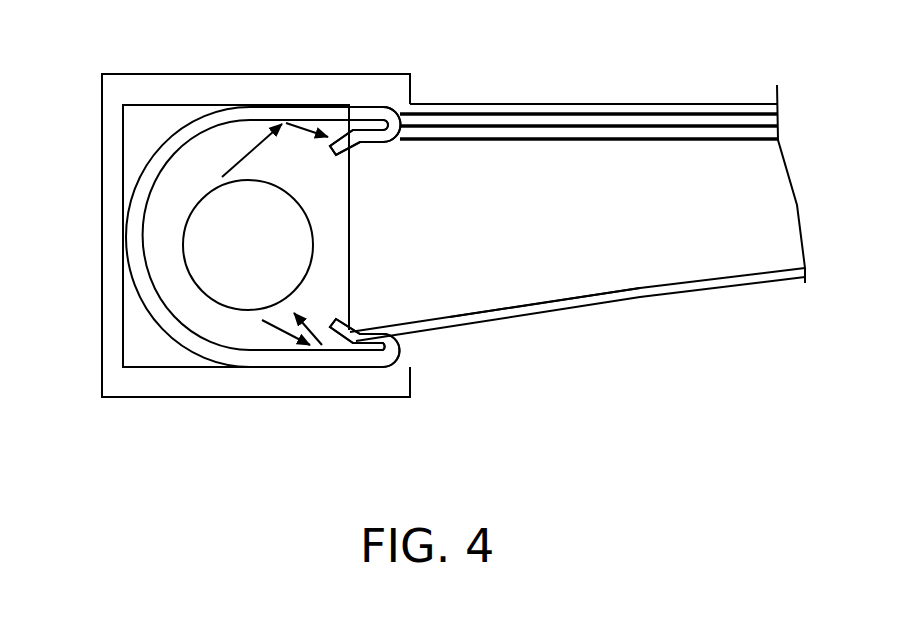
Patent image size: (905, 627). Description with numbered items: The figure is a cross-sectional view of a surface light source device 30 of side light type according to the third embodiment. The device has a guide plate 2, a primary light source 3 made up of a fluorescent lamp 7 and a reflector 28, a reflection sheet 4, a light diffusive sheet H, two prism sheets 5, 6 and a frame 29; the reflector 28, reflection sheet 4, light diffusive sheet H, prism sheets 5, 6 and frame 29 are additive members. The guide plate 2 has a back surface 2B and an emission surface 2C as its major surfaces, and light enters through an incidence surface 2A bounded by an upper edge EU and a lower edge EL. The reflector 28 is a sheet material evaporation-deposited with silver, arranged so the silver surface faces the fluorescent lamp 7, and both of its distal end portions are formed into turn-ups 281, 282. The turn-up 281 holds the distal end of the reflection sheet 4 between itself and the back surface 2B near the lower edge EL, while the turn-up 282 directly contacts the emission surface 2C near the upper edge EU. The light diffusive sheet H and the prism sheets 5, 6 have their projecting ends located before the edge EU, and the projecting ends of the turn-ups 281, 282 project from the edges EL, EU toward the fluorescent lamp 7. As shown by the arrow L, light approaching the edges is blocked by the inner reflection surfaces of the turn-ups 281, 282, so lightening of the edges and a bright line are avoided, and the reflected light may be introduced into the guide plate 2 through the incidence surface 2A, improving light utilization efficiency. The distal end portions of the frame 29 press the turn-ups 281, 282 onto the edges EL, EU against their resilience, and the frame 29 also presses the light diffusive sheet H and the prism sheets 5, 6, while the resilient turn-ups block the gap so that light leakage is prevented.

The guide plate 2 is at (653, 274).
The incidence surface 2A is at (350, 203).
The back surface 2B is at (743, 279).
The emission surface 2C is at (601, 142).
The primary light source 3 is at (147, 137).
The reflection sheet 4 is at (555, 300).
The prism sheet 5 is at (591, 140).
The prism sheet 6 is at (517, 103).
The fluorescent lamp 7 is at (233, 303).
The reflector 28 is at (170, 318).
The frame 29 is at (238, 88).
The surface light source device 30 is at (222, 455).
The turn-up 281 is at (365, 338).
The turn-up 282 is at (368, 137).
The upper edge EU is at (350, 147).
The lower edge EL is at (352, 330).
The light diffusive sheet H is at (712, 140).
The arrow indicating light L is at (279, 168).